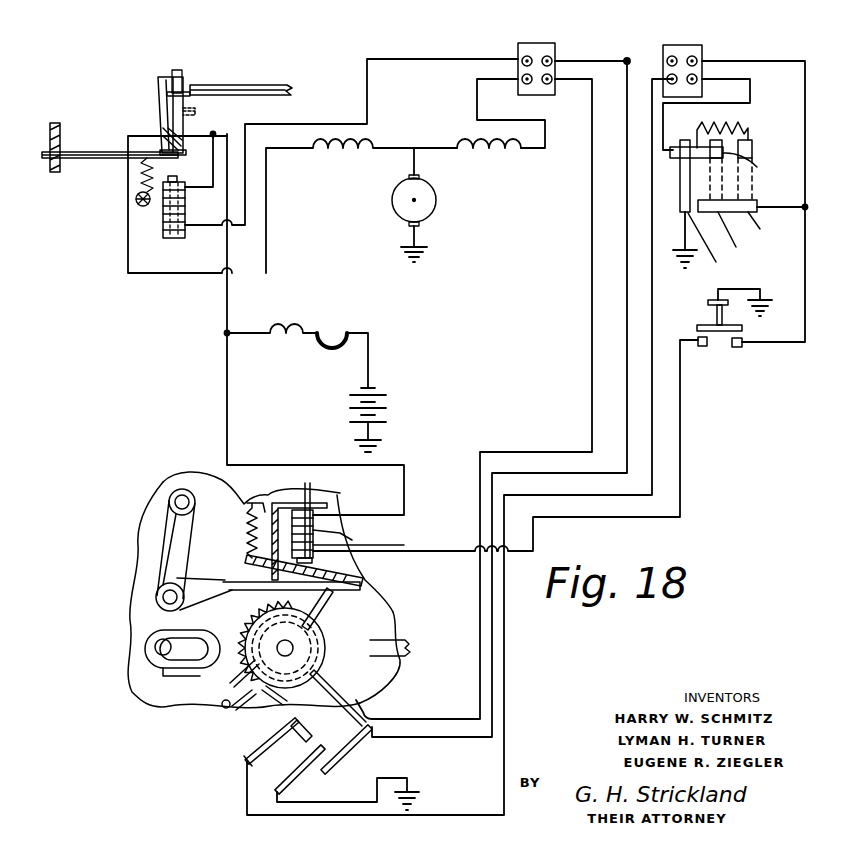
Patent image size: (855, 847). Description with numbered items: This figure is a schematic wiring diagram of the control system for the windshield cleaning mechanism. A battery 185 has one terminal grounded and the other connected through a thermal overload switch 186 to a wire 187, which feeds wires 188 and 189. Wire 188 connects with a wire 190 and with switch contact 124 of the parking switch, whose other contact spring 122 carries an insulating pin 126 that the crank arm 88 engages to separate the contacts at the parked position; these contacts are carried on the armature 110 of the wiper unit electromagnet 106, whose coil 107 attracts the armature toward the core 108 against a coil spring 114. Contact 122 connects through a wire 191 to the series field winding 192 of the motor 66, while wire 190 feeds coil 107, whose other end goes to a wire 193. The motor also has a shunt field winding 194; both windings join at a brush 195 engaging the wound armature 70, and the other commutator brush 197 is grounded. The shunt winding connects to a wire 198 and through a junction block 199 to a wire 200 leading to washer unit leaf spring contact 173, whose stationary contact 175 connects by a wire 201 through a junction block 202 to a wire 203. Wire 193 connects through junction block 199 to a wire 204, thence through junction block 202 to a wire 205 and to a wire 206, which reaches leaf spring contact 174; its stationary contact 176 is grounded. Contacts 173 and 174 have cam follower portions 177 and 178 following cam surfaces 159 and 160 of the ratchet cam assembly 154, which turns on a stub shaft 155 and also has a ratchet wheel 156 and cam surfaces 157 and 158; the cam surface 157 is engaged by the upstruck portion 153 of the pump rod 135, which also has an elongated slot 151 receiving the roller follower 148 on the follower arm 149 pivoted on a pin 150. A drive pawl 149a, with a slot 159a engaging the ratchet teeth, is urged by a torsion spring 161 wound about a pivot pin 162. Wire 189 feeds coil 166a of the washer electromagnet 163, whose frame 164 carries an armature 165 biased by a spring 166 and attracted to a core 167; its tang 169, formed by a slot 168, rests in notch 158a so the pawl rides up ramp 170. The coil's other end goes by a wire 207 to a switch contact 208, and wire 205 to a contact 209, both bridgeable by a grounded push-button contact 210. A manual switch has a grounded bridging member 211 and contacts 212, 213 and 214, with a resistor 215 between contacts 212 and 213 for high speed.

The motor 66 is at (437, 193).
The wound armature 70 is at (428, 208).
The crank arm 88 is at (281, 86).
The electromagnet 106 is at (162, 212).
The coil 107 is at (163, 222).
The core 108 is at (180, 232).
The armature 110 is at (110, 150).
The coil spring 114 is at (140, 170).
The contact spring 122 is at (157, 80).
The contact spring 124 is at (184, 76).
The pin 126 is at (191, 92).
The pump rod 135 is at (413, 645).
The follower 148 is at (156, 650).
The follower arm 149 is at (162, 545).
The drive pawl 149a is at (156, 593).
The pin 150 is at (171, 492).
The elongated slot 151 is at (163, 676).
The upstruck portion 153 is at (147, 636).
The ratchet cam assembly 154 is at (237, 710).
The stub shaft 155 is at (282, 645).
The ratchet wheel 156 is at (230, 685).
The cam surface 157 is at (222, 707).
The cam surface 158 is at (188, 697).
The notch 158a is at (392, 613).
The cam surface 159 is at (280, 698).
The slot 159a is at (242, 581).
The cam surface 160 is at (350, 667).
The torsion spring 161 is at (168, 520).
The pivot pin 162 is at (168, 598).
The electromagnet 163 is at (345, 537).
The frame 164 is at (330, 505).
The armature 165 is at (246, 528).
The spring 166 is at (250, 500).
The coil 166a is at (307, 505).
The core 167 is at (355, 562).
The slot 168 is at (302, 577).
The tang 169 is at (333, 607).
The ramp 170 is at (382, 586).
The movable leaf spring contact 173 is at (290, 744).
The movable leaf spring contact 174 is at (338, 766).
The stationary contact 175 is at (245, 760).
The stationary contact 176 is at (312, 768).
The cam follower portion 177 is at (312, 727).
The cam follower portion 178 is at (366, 704).
The battery 185 is at (352, 413).
The thermal overload switch 186 is at (341, 330).
The wire 187 is at (255, 330).
The wire 188 is at (227, 291).
The wire 189 is at (227, 380).
The wire 190 is at (212, 176).
The wire 191 is at (132, 191).
The series field winding 192 is at (356, 157).
The wire 193 is at (313, 124).
The shunt field winding 194 is at (462, 146).
The brush 195 is at (399, 181).
The commutator brush 197 is at (408, 224).
The wire 198 is at (540, 150).
The junction block 199 is at (541, 42).
The wire 200 is at (592, 102).
The wire 201 is at (652, 62).
The junction block 202 is at (688, 44).
The wire 203 is at (751, 98).
The wire 204 is at (602, 60).
The wire 205 is at (757, 60).
The wire 206 is at (626, 194).
The wire 207 is at (680, 492).
The switch contact 208 is at (706, 347).
The switch contact 209 is at (745, 338).
The movable contact 210 is at (700, 322).
The movable bridging member 211 is at (684, 140).
The stationary contact 212 is at (752, 163).
The stationary contact 213 is at (752, 151).
The stationary contact 214 is at (754, 200).
The resistor 215 is at (744, 130).